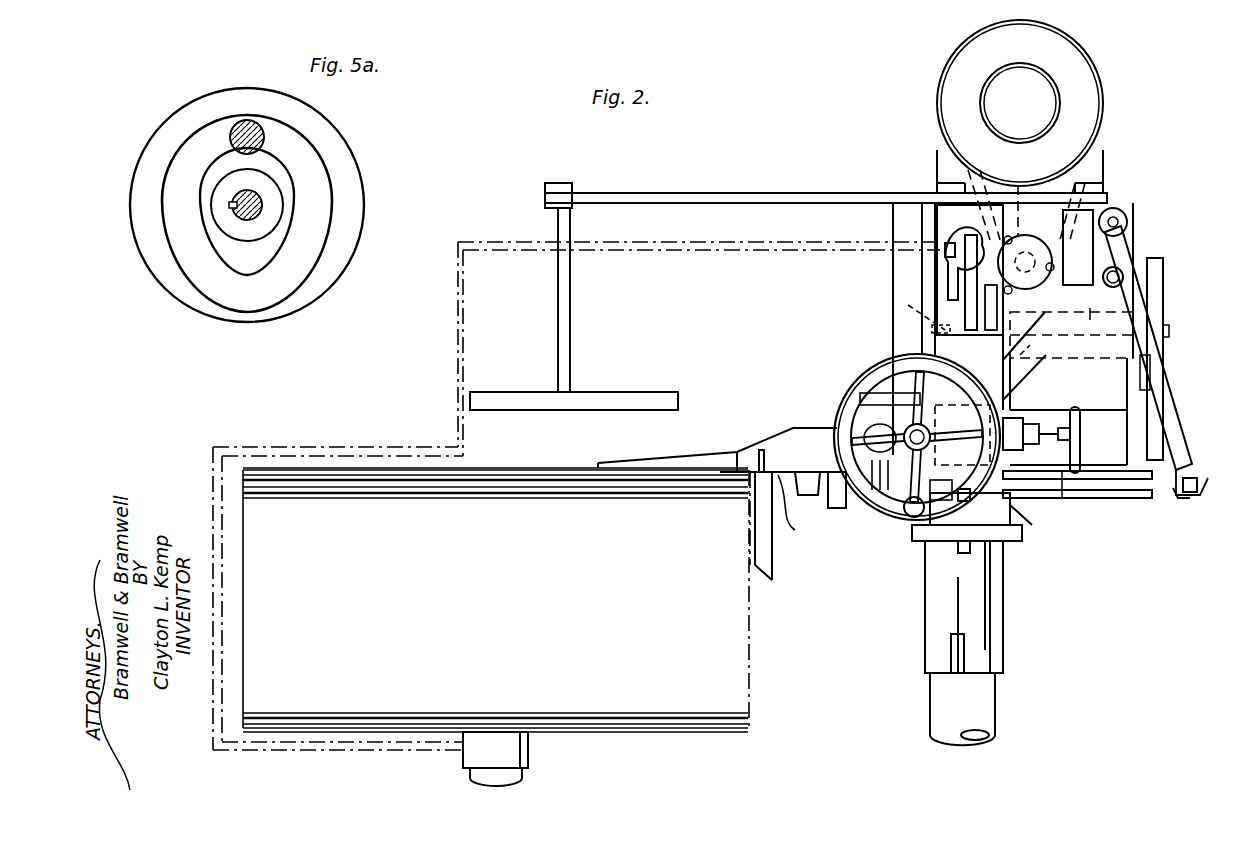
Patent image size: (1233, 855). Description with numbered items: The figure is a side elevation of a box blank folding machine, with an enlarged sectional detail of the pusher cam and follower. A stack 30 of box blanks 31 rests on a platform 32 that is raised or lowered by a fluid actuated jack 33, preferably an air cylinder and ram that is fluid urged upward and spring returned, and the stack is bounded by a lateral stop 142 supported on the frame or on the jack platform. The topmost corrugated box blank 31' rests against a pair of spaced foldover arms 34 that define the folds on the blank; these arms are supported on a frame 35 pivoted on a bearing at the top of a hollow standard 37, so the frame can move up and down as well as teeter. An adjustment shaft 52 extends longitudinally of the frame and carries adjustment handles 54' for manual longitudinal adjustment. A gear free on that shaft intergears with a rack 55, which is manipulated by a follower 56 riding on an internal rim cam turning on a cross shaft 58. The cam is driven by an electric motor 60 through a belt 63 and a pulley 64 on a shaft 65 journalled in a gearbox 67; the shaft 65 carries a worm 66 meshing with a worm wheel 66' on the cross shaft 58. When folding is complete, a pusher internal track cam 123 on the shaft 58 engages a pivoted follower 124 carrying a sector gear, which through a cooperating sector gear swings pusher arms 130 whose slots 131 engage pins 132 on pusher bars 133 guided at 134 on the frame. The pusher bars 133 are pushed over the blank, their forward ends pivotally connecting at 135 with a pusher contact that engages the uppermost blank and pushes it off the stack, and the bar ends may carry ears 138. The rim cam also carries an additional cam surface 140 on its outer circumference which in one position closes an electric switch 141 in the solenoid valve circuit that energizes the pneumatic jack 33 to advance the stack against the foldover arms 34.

In FIG. 2, the stack 30 is at (752, 650).
In FIG. 2, the box blanks 31 is at (495, 508).
In FIG. 2, the topmost corrugated box blank 31' is at (495, 449).
In FIG. 2, the platform 32 is at (717, 734).
In FIG. 2, the fluid actuated jack 33 is at (530, 753).
In FIG. 2, the foldover arms 34 is at (672, 457).
In FIG. 2, the frame 35 is at (1015, 420).
In FIG. 2, the hollow standard 37 is at (997, 712).
In FIG. 2, the adjustment shaft 52 is at (962, 293).
In FIG. 2, the adjustment handles 54' is at (882, 520).
In FIG. 2, the rack 55 is at (874, 386).
In FIG. 2, the follower 56 is at (900, 312).
In FIG. 5a, the cross shaft 58 is at (262, 205).
In FIG. 2, the cross shaft 58 is at (1080, 304).
In FIG. 2, the electric motor 60 is at (1020, 106).
In FIG. 2, the belt 63 is at (1090, 170).
In FIG. 2, the pulley 64 is at (998, 198).
In FIG. 2, the shaft 65 is at (1027, 260).
In FIG. 2, the worm 66 is at (1069, 247).
In FIG. 2, the worm wheel 66' is at (1053, 349).
In FIG. 2, the gearbox 67 is at (1128, 212).
In FIG. 5a, the pusher internal track cam 123 is at (313, 166).
In FIG. 2, the pusher internal track cam 123 is at (1157, 262).
In FIG. 5a, the follower 124 is at (233, 126).
In FIG. 2, the pusher arms 130 is at (1163, 388).
In FIG. 2, the slots 131 is at (1192, 496).
In FIG. 2, the pins 132 is at (1180, 492).
In FIG. 2, the pusher bars 133 is at (1113, 486).
In FIG. 2, the guide 134 is at (1065, 502).
In FIG. 2, the pivotal connection 135 is at (799, 512).
In FIG. 2, the ears 138 is at (765, 462).
In FIG. 2, the additional cam surface 140 is at (946, 262).
In FIG. 2, the electric switch 141 is at (942, 250).
In FIG. 2, the lateral stop 142 is at (766, 570).